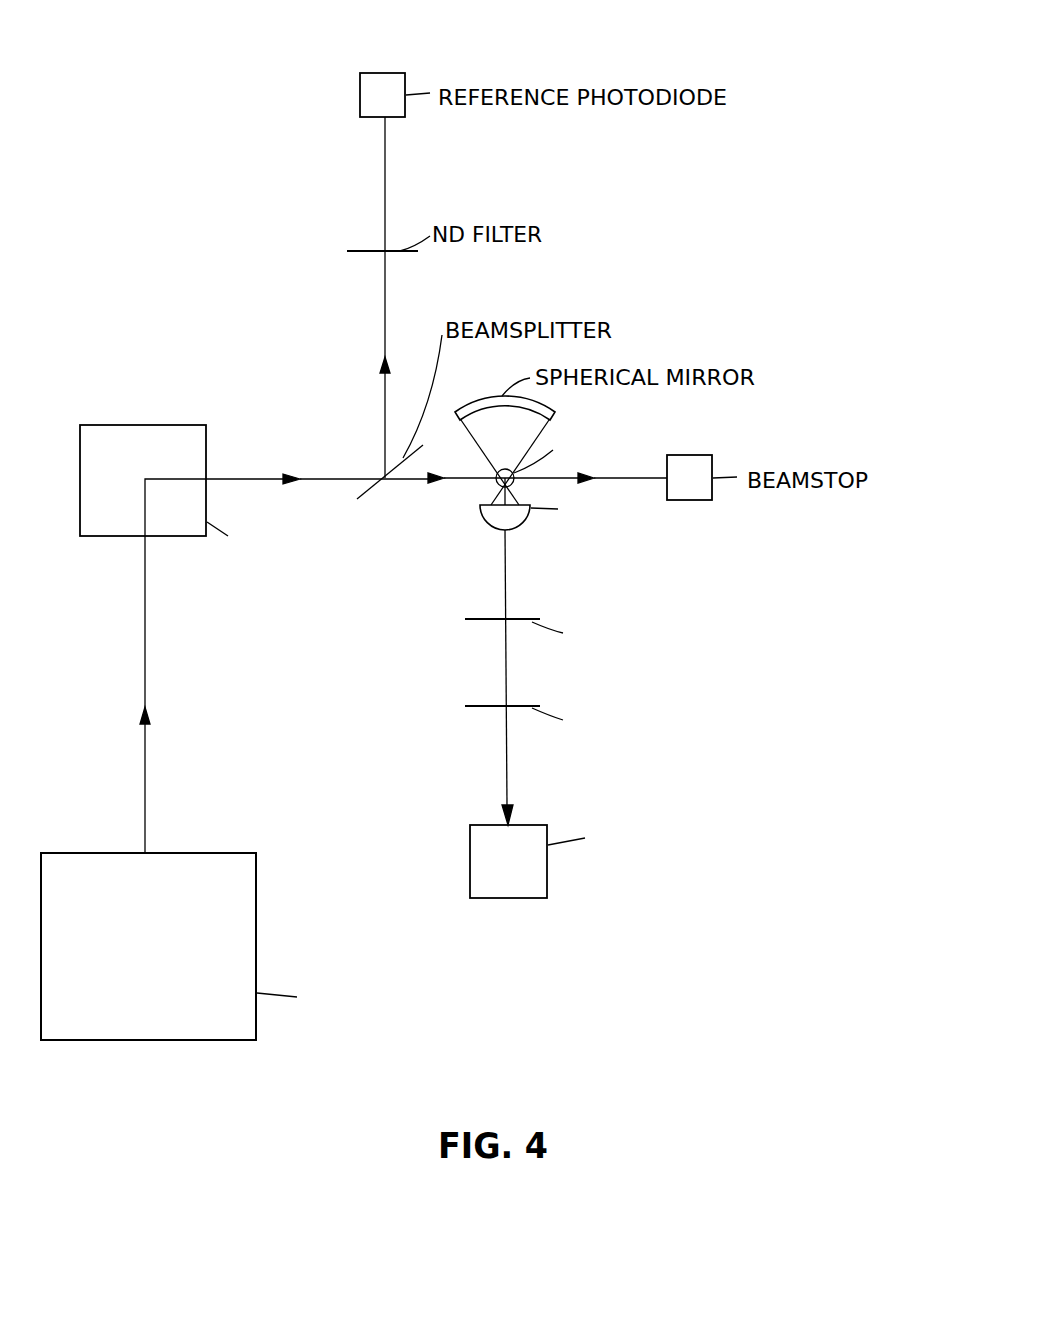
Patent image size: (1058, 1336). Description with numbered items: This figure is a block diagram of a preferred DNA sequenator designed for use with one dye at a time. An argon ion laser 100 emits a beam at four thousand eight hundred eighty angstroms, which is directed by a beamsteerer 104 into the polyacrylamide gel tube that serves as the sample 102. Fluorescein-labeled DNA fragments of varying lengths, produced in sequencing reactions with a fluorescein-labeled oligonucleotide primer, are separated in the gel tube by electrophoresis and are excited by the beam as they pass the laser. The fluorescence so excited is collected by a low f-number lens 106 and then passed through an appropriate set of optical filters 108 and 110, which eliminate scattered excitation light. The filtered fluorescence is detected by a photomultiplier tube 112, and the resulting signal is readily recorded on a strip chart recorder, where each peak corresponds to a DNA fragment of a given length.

The argon ion laser 100 is at (257, 905).
The polyacrylamide gel tube (sample) 102 is at (498, 484).
The beamsteerer 104 is at (207, 438).
The low f-number lens 106 is at (520, 527).
The optical filter 108 is at (478, 617).
The optical filter 110 is at (478, 704).
The photomultiplier tube (PMT) 112 is at (517, 898).